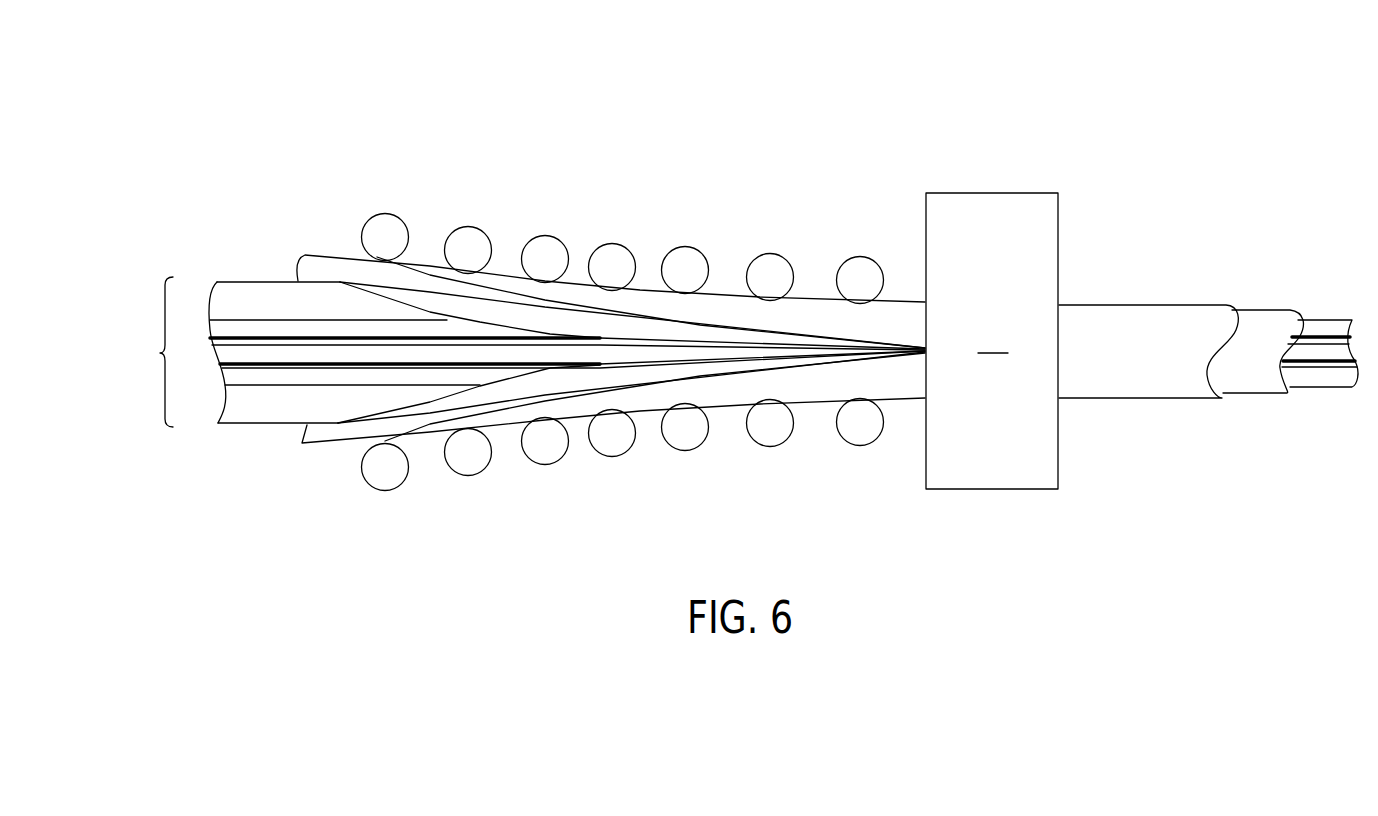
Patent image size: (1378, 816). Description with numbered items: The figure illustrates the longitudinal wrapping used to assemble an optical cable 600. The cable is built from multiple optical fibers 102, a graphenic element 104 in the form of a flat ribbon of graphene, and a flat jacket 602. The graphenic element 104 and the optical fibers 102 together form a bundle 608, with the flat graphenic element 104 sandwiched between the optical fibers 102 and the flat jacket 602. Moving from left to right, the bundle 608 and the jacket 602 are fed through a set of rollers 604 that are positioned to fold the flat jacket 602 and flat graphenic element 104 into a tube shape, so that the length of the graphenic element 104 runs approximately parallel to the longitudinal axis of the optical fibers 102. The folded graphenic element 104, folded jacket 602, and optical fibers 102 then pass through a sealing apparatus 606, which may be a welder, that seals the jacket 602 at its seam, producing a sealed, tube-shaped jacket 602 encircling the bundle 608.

The optical cable 600 is at (1253, 95).
The jacket 602 is at (1147, 392).
The rollers 604 is at (468, 238).
The sealing apparatus 606 is at (992, 341).
The bundle 608 is at (150, 352).
The graphenic element 104 is at (247, 292).
The optical fibers 102 is at (300, 330).